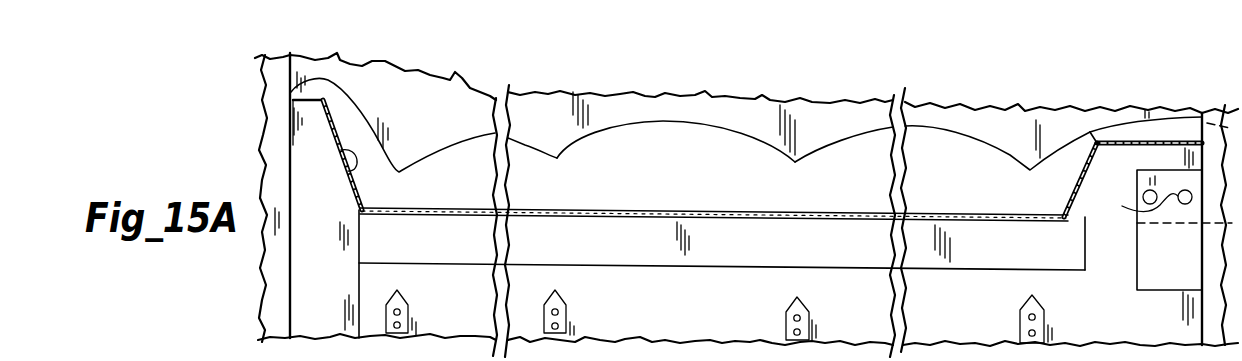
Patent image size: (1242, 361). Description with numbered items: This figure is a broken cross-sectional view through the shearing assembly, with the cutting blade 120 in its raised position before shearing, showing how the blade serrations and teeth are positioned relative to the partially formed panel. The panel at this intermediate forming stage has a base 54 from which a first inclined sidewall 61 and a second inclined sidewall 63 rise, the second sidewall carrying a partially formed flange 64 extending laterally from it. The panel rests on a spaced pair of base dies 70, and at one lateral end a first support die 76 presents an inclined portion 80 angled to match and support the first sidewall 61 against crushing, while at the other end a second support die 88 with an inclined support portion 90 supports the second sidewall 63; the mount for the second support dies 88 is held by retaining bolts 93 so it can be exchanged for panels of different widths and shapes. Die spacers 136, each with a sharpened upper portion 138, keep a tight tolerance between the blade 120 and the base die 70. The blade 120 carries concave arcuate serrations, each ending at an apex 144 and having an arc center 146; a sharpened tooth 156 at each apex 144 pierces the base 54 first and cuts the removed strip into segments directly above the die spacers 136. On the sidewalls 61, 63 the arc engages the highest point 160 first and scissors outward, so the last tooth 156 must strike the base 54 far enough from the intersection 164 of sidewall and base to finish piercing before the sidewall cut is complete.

The base 54 is at (639, 219).
The first inclined sidewall 61 is at (338, 140).
The second inclined sidewall 63 is at (1075, 175).
The partially formed flange 64 is at (1130, 143).
The base die 70 is at (382, 243).
The first support die 76 is at (313, 192).
The inclined portion 80 is at (340, 156).
The second support die 88 is at (1177, 133).
The inclined support portion 90 is at (1080, 210).
The retaining bolts 93 is at (1136, 206).
The cutting blade 120 is at (430, 117).
The die spacers 136 is at (784, 320).
The sharpened upper portion 138 is at (790, 297).
The apex 144 is at (795, 163).
The arc center 146 is at (680, 122).
The sharpened tooth 156 is at (557, 157).
The highest point 160 is at (1091, 141).
The intersection 164 is at (1068, 222).